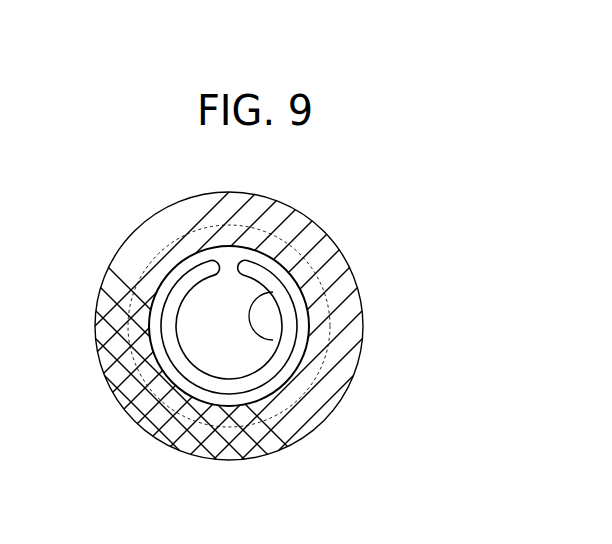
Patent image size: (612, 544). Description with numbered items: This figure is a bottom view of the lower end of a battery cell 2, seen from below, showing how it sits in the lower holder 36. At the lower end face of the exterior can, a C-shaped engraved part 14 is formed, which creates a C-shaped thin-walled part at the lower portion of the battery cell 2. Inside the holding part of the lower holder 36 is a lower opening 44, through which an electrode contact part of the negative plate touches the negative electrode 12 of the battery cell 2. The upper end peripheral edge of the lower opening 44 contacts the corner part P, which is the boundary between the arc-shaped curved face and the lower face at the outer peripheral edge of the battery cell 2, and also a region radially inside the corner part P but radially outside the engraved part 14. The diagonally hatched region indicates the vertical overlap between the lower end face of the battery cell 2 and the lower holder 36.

The corner part P is at (293, 208).
The lower holder 36 is at (343, 310).
The C-shaped engraved part 14 is at (257, 375).
The negative electrode 12 is at (198, 348).
The lower opening 44 is at (274, 292).
The battery cell 2 is at (227, 357).